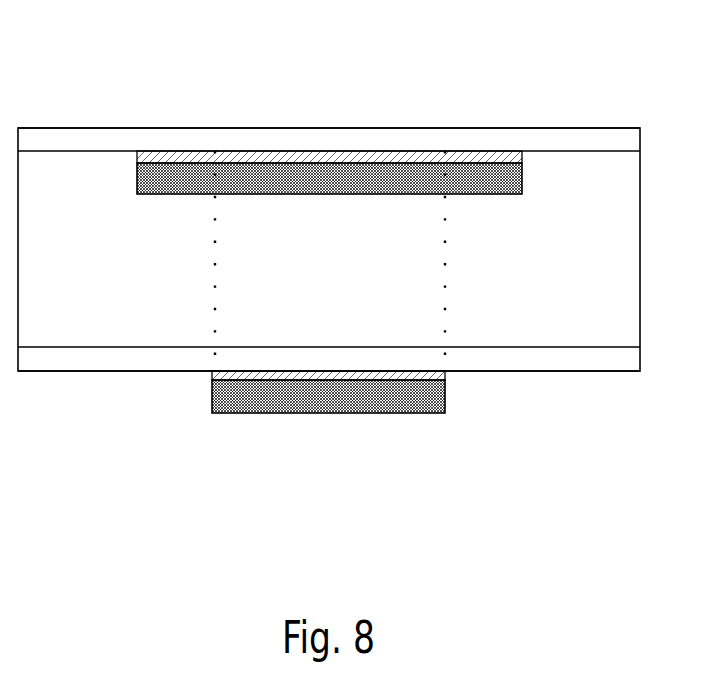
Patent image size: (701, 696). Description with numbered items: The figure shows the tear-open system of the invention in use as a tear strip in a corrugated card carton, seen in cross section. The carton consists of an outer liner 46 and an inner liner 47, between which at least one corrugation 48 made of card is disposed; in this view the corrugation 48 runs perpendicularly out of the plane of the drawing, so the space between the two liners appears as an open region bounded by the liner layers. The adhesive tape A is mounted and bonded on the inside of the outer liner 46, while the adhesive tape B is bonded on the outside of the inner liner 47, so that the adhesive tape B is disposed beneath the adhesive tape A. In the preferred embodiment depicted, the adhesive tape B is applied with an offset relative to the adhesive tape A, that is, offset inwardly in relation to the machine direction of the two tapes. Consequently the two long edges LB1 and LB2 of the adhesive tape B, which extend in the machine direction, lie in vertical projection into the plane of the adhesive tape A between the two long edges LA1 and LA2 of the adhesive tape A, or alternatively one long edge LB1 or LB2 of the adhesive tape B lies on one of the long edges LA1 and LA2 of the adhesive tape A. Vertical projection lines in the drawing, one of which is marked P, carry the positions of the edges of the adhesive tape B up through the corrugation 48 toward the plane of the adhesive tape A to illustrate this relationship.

The outer liner 46 is at (316, 143).
The inner liner 47 is at (497, 360).
The corrugation 48 is at (326, 249).
The long edge of adhesive tape A LA1 is at (137, 170).
The long edge of adhesive tape A LA2 is at (522, 174).
The long edge of adhesive tape B LB1 is at (212, 401).
The long edge of adhesive tape B LB2 is at (445, 404).
The adhesive tape A is at (534, 209).
The adhesive tape B is at (168, 400).
The overlap region boundary P is at (445, 225).